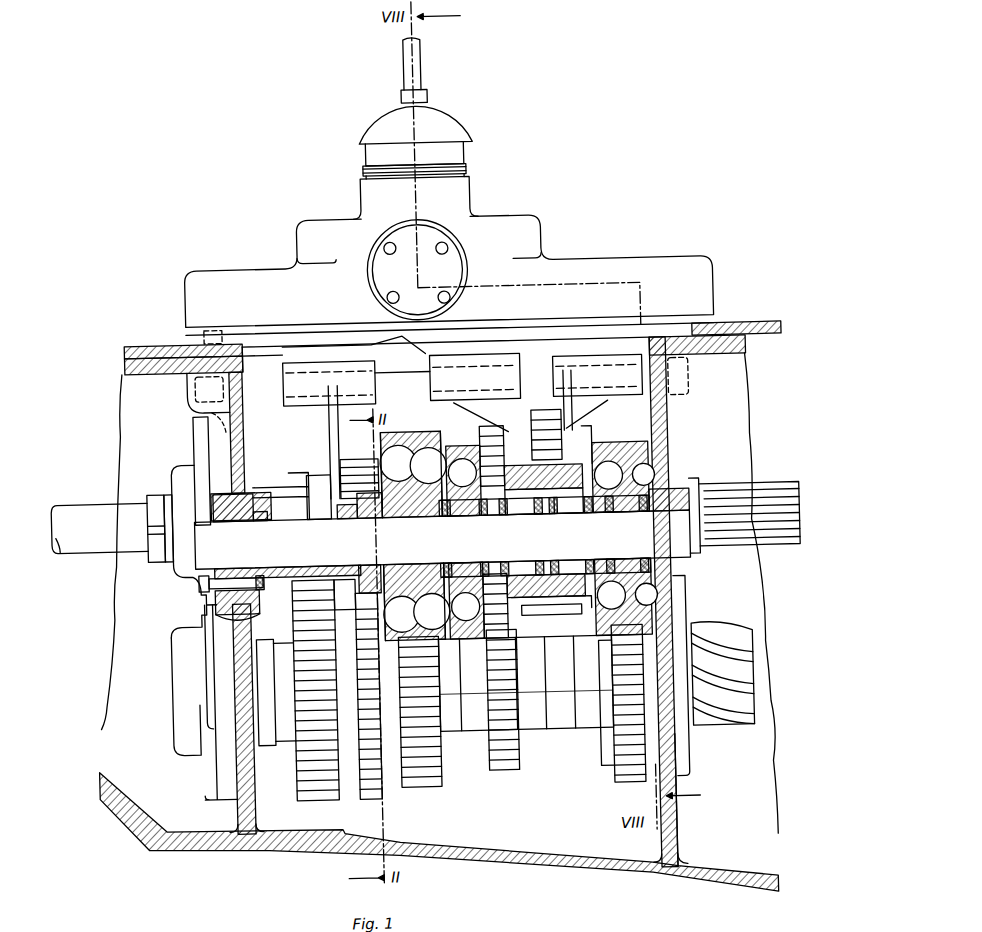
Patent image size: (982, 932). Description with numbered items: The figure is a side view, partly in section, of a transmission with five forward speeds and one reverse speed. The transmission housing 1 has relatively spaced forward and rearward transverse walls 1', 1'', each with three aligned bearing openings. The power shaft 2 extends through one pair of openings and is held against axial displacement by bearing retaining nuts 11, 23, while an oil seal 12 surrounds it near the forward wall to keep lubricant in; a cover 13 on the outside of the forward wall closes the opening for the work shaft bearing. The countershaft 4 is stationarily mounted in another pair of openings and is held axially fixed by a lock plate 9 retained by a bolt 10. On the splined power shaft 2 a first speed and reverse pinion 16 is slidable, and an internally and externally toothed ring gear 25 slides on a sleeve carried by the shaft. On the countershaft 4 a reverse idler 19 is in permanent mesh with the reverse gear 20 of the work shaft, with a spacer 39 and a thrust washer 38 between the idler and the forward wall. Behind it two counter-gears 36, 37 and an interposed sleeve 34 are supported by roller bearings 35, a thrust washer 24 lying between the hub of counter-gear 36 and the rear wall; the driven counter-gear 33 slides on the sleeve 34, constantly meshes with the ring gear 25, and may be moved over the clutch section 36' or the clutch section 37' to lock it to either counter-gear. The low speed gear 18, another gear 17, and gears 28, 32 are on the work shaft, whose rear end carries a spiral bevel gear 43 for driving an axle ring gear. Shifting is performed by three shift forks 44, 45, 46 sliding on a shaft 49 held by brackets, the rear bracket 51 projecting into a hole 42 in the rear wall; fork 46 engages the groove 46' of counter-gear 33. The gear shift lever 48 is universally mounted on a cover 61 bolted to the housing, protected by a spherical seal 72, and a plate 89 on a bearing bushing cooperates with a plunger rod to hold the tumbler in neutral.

The transmission housing 1 is at (442, 615).
The forward transverse wall 1' is at (254, 718).
The rearward transverse wall 1'' is at (692, 800).
The power shaft 2 is at (82, 500).
The countershaft 4 is at (196, 524).
The lock plate 9 is at (205, 598).
The bolt 10 is at (200, 576).
The bearing retaining nut 11 is at (155, 492).
The oil seal 12 is at (184, 462).
The cover 13 is at (175, 713).
The first speed and reverse pinion 16 is at (354, 462).
The gear 17 is at (366, 798).
The low speed gear 18 is at (316, 796).
The reverse idler 19 is at (410, 430).
The reverse gear 20 is at (424, 786).
The bearing retaining nut 23 is at (702, 490).
The thrust washer 24 is at (648, 508).
The ring gear 25 is at (543, 418).
The gear 28 is at (626, 784).
The gear 32 is at (499, 772).
The driven counter-gear 33 is at (583, 610).
The sleeve 34 is at (560, 510).
The roller bearings 35 is at (520, 511).
The counter-gear 36 is at (623, 460).
The clutch section 36' is at (623, 597).
The counter-gear 37 is at (475, 464).
The clutch section 37' is at (479, 613).
The thrust washer 38 is at (362, 563).
The spacer 39 is at (284, 510).
The hole 42 is at (266, 738).
The spiral bevel gear 43 is at (730, 642).
The shift fork 44 is at (322, 388).
The shift fork 45 is at (617, 388).
The shift fork 46 is at (475, 393).
The groove 46' is at (546, 605).
The gear shift lever 48 is at (415, 66).
The shaft 49 is at (403, 372).
The bracket 51 is at (692, 398).
The cover 61 is at (545, 246).
The spherical seal 72 is at (464, 129).
The plate 89 is at (467, 257).